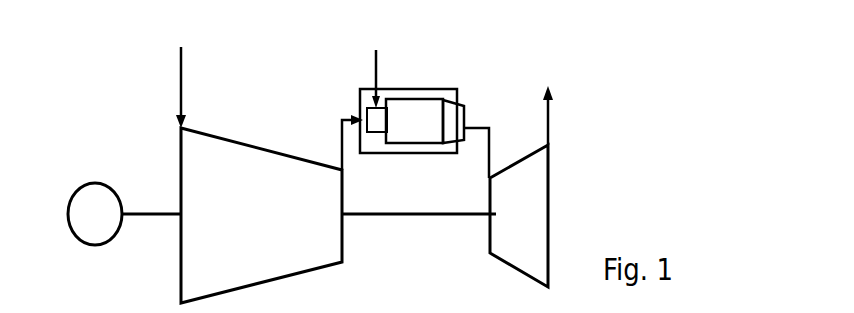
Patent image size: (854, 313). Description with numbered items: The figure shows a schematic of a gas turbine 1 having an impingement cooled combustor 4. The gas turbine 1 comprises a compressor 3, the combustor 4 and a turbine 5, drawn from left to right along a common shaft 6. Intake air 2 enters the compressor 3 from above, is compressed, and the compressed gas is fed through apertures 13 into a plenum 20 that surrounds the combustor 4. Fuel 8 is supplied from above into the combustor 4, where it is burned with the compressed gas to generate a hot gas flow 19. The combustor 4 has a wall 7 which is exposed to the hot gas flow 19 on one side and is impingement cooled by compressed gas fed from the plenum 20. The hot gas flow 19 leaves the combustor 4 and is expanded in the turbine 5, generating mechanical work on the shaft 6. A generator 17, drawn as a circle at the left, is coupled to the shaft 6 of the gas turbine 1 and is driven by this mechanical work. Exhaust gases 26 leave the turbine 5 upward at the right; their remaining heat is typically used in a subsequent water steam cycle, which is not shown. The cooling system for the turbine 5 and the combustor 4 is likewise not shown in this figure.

The gas turbine 1 is at (75, 21).
The intake air 2 is at (170, 87).
The compressor 3 is at (261, 215).
The combustor 4 is at (403, 125).
The turbine 5 is at (519, 216).
The shaft 6 is at (309, 203).
The wall 7 is at (427, 97).
The fuel 8 is at (383, 79).
The apertures 13 is at (335, 140).
The generator 17 is at (95, 214).
The hot gas flow 19 is at (485, 141).
The plenum 20 is at (372, 145).
The exhaust gases 26 is at (563, 115).